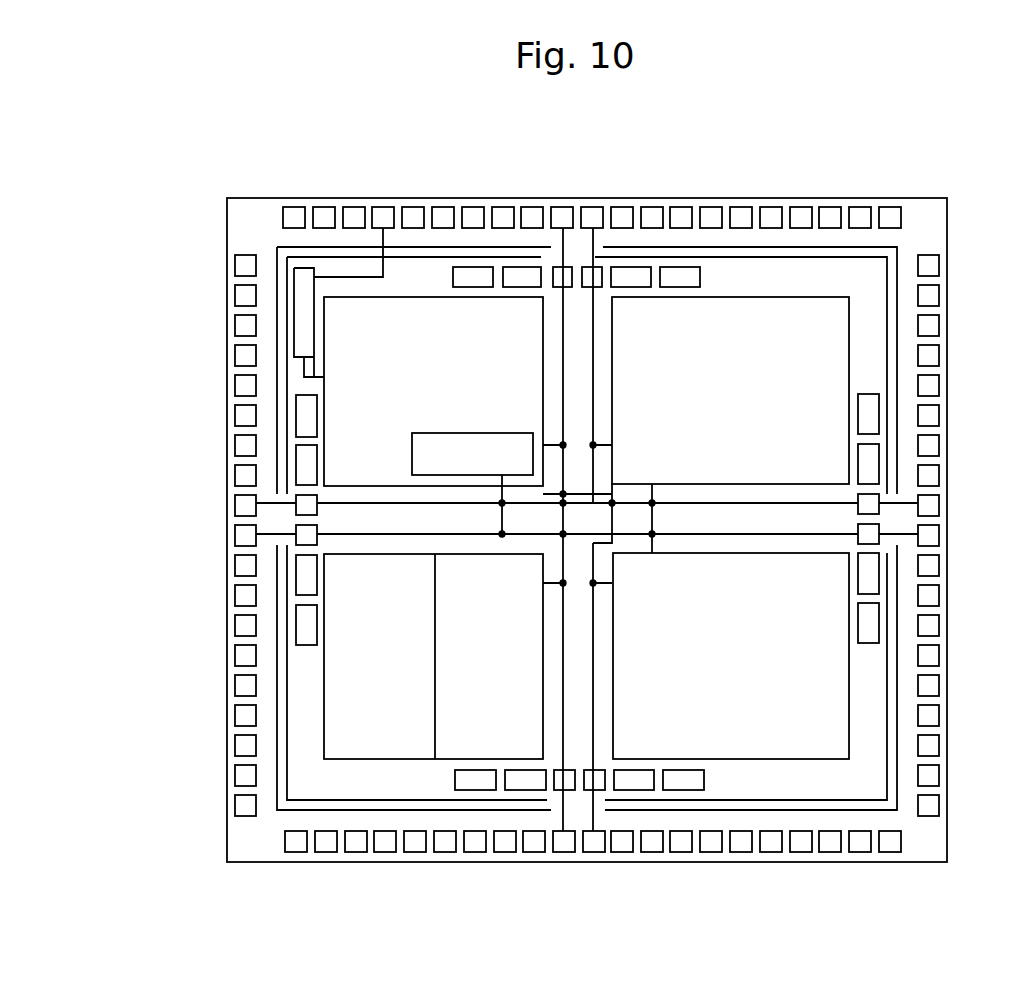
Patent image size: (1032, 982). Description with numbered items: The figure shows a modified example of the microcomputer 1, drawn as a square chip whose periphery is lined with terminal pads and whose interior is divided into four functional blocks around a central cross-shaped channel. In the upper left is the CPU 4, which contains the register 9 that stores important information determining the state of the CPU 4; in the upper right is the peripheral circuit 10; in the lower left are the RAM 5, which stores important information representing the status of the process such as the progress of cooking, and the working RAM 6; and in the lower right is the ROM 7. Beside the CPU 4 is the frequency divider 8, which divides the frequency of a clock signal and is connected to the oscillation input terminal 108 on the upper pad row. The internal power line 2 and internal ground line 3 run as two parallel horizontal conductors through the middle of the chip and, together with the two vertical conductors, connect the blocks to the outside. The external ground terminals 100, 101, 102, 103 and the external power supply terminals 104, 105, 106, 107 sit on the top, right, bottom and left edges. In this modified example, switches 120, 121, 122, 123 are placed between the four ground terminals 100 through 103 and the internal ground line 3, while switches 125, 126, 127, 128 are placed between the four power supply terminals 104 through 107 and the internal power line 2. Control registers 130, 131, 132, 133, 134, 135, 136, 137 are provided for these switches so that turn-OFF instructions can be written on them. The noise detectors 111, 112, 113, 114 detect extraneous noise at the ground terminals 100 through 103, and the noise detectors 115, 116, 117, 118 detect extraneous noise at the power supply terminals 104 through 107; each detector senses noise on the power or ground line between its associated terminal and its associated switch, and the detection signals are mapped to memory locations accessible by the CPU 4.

The microcomputer 1 is at (306, 186).
The internal power line 2 is at (390, 507).
The internal ground line 3 is at (443, 530).
The CPU 4 is at (405, 292).
The RAM 5 is at (363, 771).
The RAM 6 is at (453, 771).
The ROM 7 is at (816, 771).
The frequency divider 8 is at (314, 325).
The register 9 is at (502, 433).
The peripheral circuit 10 is at (816, 292).
The external ground terminal 100 is at (562, 207).
The external ground terminal 101 is at (930, 503).
The external ground terminal 102 is at (595, 845).
The external ground terminal 103 is at (246, 534).
The external power supply terminal 104 is at (592, 207).
The external power supply terminal 105 is at (930, 534).
The external power supply terminal 106 is at (565, 845).
The external power supply terminal 107 is at (246, 503).
The oscillation input terminal 108 is at (385, 207).
The noise detector 111 is at (527, 287).
The noise detector 112 is at (864, 450).
The noise detector 113 is at (628, 770).
The noise detector 114 is at (308, 585).
The noise detector 115 is at (627, 288).
The noise detector 116 is at (864, 586).
The noise detector 117 is at (530, 770).
The noise detector 118 is at (308, 457).
The switch 120 is at (556, 287).
The switch 121 is at (860, 502).
The switch 122 is at (603, 770).
The switch 123 is at (317, 542).
The switch 125 is at (597, 288).
The switch 126 is at (860, 536).
The switch 127 is at (560, 770).
The switch 128 is at (308, 500).
The control register 130 is at (462, 287).
The control register 131 is at (864, 405).
The control register 132 is at (695, 770).
The control register 133 is at (308, 632).
The control register 134 is at (695, 288).
The control register 135 is at (864, 636).
The control register 136 is at (463, 770).
The control register 137 is at (308, 408).